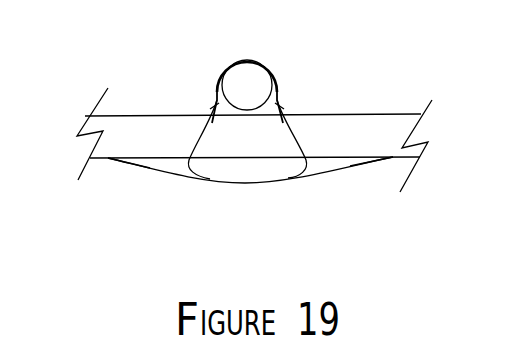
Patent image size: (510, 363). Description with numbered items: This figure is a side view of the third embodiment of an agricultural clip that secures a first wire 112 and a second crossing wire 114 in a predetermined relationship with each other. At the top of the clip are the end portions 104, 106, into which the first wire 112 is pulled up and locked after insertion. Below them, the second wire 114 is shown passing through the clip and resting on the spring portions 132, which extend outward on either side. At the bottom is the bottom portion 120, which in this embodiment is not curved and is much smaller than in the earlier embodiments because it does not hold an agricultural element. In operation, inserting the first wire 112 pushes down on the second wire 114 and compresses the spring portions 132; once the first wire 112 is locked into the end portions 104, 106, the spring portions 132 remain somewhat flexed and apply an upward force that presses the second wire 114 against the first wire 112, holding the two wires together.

The end portion 104 is at (220, 64).
The end portion 106 is at (263, 59).
The first wire 112 is at (243, 83).
The second wire 114 is at (177, 138).
The bottom portion 120 is at (260, 182).
The spring portions 132 is at (158, 167).